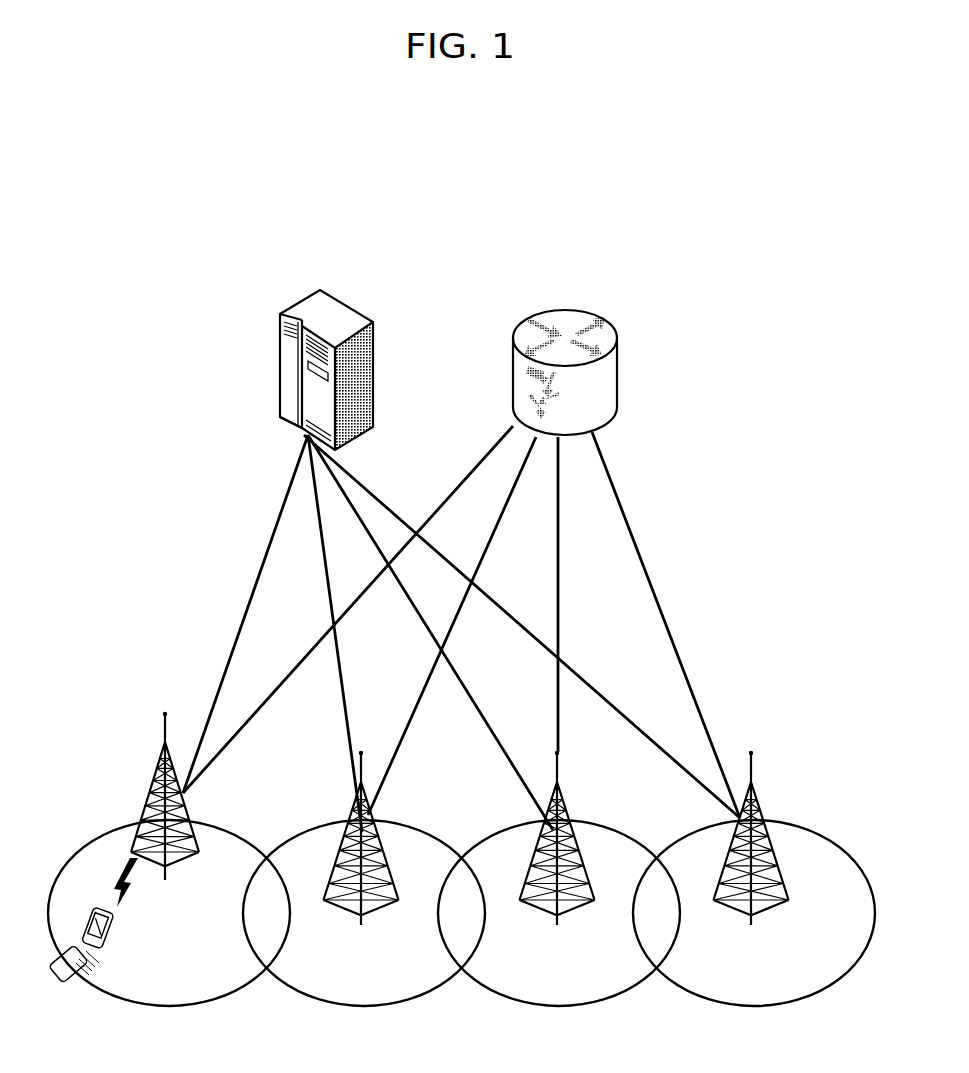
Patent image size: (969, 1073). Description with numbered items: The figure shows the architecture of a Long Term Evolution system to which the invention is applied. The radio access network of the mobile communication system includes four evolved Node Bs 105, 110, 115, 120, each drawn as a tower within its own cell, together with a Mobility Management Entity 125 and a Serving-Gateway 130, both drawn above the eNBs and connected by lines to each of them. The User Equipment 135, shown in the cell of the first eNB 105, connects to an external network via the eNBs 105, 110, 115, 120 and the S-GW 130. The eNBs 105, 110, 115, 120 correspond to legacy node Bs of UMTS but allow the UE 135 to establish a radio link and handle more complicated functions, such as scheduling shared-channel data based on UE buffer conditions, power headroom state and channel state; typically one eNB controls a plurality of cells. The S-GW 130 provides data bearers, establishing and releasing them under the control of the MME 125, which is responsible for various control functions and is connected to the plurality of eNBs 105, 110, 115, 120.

The evolved Node B 105 is at (152, 775).
The evolved Node B 110 is at (352, 803).
The evolved Node B 115 is at (566, 801).
The evolved Node B 120 is at (761, 801).
The Mobility Management Entity 125 is at (312, 312).
The Serving-Gateway 130 is at (562, 317).
The User Equipment 135 is at (118, 939).